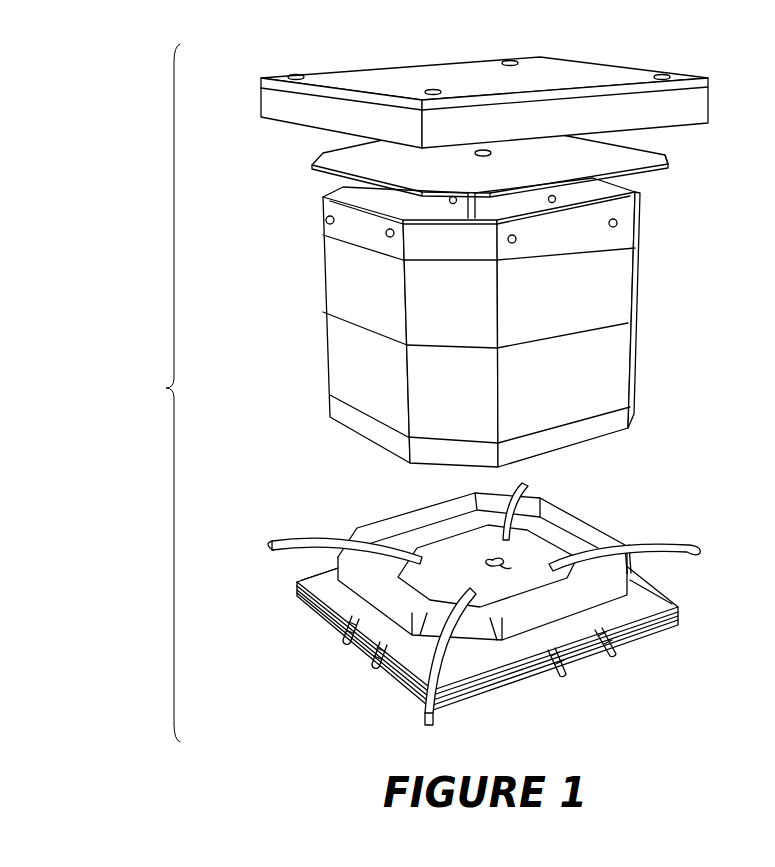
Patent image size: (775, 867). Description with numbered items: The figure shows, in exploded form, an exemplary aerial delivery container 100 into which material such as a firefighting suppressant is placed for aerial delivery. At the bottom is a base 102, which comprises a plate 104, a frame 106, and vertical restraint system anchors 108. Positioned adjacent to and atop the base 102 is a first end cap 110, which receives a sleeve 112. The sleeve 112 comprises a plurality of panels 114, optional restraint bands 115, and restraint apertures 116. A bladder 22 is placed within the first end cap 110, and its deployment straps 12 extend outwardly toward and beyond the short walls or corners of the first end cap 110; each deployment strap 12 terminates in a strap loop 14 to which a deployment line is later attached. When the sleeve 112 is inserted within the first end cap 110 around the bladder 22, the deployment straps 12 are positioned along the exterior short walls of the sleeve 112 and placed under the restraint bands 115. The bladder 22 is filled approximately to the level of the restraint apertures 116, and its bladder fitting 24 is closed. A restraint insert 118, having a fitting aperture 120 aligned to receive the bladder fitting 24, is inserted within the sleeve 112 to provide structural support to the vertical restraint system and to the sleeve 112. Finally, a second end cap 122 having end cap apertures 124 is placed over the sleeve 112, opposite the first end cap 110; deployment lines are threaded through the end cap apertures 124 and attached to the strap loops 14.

The aerial delivery container 100 is at (114, 389).
The base 102 is at (510, 627).
The plate 104 is at (470, 663).
The frame 106 is at (658, 620).
The vertical restraint system anchors 108 is at (615, 660).
The first end cap 110 is at (502, 556).
The sleeve 112 is at (491, 326).
The panels 114 is at (379, 378).
The restraint bands 115 is at (543, 258).
The restraint apertures 116 is at (328, 217).
The restraint insert 118 is at (640, 163).
The fitting aperture 120 is at (489, 156).
The second end cap 122 is at (697, 107).
The end cap apertures 124 is at (517, 62).
The deployment straps 12 is at (489, 604).
The strap loop 14 is at (272, 542).
The bladder 22 is at (531, 542).
The bladder fitting 24 is at (507, 565).